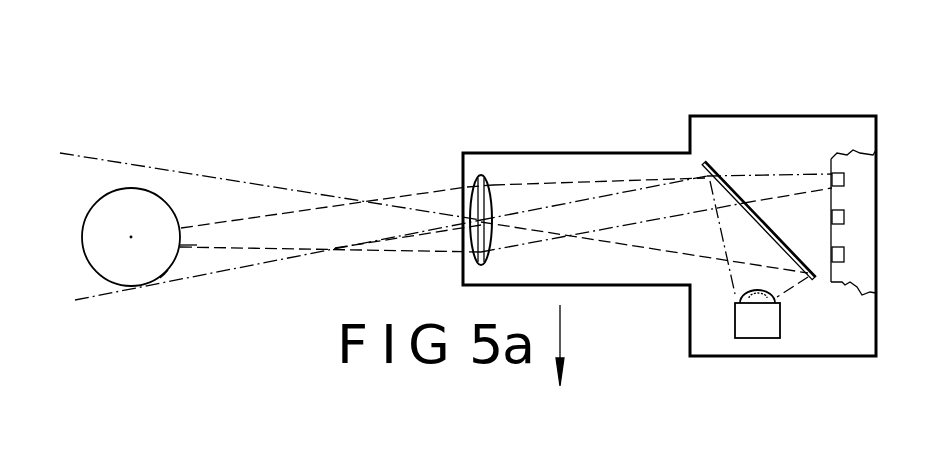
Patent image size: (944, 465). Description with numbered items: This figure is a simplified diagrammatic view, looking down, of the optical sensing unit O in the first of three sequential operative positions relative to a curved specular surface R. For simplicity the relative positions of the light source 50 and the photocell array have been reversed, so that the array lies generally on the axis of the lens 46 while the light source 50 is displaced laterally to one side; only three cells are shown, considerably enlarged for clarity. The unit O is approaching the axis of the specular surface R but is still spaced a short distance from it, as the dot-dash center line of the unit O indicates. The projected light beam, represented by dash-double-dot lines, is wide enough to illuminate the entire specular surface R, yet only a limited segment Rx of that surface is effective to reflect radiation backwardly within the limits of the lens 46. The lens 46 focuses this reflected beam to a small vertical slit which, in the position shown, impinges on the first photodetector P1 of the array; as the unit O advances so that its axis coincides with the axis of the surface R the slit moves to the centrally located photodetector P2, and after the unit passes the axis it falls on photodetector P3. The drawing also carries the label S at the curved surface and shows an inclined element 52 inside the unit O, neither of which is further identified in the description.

The spherical object / surface being measured S is at (83, 208).
The curved specular surface R is at (168, 270).
The limited segment of the specular surface Rx is at (180, 232).
The optical sensing unit O is at (715, 97).
The lens 46 is at (492, 190).
The beam splitter mirror 52 is at (742, 167).
The light source 50 is at (764, 330).
The first photodetector P1 is at (844, 180).
The second photodetector P2 is at (844, 217).
The third photodetector P3 is at (844, 255).